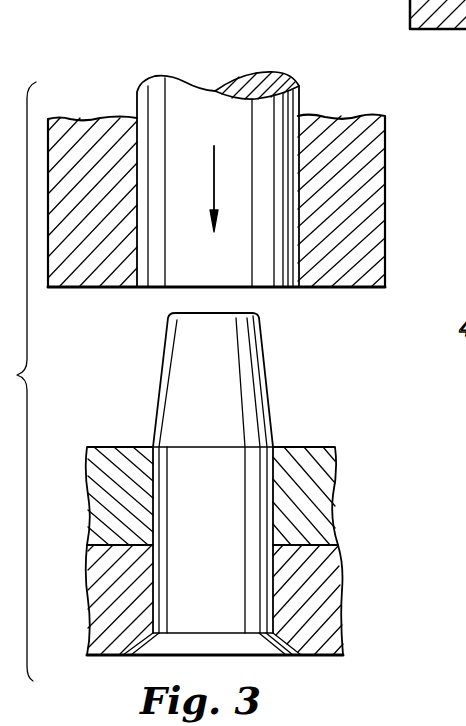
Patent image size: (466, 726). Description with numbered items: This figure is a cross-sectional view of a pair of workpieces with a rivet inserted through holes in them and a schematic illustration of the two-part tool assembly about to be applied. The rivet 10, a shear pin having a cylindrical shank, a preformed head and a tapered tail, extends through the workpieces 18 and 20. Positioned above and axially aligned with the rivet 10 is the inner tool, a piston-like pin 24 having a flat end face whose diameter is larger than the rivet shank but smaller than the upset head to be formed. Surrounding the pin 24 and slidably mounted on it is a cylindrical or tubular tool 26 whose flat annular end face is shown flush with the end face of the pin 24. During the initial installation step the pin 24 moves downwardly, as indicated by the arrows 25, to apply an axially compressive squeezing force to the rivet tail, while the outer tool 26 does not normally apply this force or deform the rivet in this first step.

The rivet 10 is at (280, 390).
The workpiece 18 is at (331, 474).
The workpiece 20 is at (328, 588).
The tool pin 24 is at (193, 103).
The arrows 25 is at (213, 176).
The tubular tool 26 is at (376, 166).